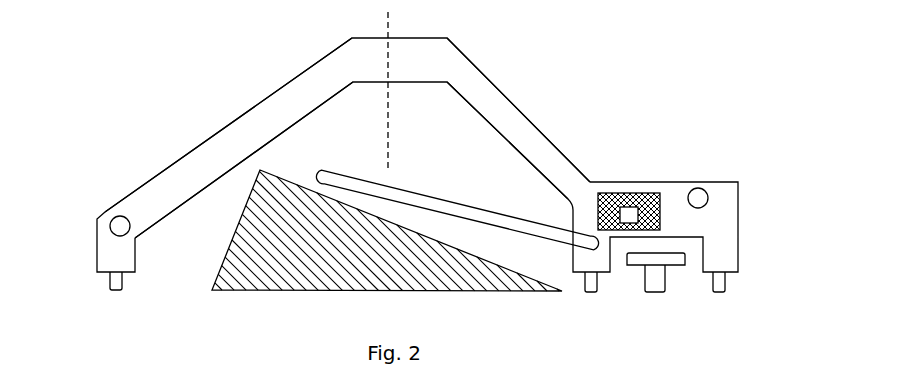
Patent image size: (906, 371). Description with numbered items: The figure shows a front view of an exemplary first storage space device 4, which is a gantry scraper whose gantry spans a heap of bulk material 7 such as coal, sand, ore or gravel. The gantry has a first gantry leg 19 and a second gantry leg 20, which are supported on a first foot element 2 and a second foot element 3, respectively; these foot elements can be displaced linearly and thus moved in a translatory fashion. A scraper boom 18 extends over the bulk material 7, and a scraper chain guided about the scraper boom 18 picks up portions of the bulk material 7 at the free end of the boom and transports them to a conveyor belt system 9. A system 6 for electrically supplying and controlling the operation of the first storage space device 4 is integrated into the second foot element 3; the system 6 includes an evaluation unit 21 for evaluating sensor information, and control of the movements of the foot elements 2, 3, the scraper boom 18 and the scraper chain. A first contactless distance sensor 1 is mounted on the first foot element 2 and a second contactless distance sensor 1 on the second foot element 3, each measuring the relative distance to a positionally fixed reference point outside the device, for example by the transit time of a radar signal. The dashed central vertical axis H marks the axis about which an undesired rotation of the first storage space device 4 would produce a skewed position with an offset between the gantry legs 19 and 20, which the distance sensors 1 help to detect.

The contactless distance sensor 1 is at (115, 217).
The first foot element 2 is at (97, 247).
The second foot element 3 is at (667, 181).
The first storage space device 4 is at (415, 38).
The system for electrically supplying and controlling 6 is at (630, 200).
The bulk material 7 is at (230, 250).
The conveyor belt system 9 is at (635, 266).
The scraper boom 18 is at (435, 195).
The first gantry leg 19 is at (197, 147).
The second gantry leg 20 is at (530, 121).
The evaluation unit 21 is at (624, 204).
The central vertical axis H is at (388, 125).